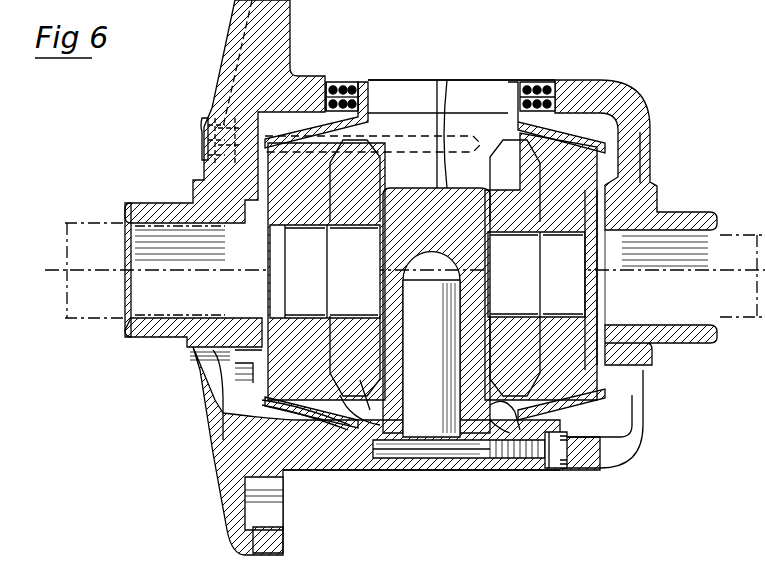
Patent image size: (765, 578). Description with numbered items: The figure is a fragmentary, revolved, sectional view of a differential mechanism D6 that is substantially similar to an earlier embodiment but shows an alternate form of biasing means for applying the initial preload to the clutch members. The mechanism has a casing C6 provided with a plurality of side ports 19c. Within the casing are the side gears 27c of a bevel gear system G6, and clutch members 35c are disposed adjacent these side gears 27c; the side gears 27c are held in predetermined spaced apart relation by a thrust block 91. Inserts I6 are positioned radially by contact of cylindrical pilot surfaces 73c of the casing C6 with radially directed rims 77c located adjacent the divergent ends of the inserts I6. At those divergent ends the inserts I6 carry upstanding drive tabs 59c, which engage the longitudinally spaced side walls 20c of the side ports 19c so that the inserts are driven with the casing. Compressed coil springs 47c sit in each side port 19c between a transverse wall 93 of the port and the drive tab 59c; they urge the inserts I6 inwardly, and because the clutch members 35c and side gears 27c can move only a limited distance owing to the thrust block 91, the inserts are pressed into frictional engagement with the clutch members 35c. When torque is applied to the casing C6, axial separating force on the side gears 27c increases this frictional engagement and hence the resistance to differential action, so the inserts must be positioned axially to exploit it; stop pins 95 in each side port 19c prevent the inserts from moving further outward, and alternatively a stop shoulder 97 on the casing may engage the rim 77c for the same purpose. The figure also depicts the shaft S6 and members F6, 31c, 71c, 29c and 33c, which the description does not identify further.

The differential mechanism D6 is at (646, 75).
The axle shaft S6 is at (105, 218).
The casing C6 is at (212, 470).
The friction flange F6 is at (262, 408).
The inserts I6 is at (270, 395).
The bevel gear system G6 is at (383, 405).
The stop shoulder 97 is at (326, 470).
The rims 77c is at (358, 422).
The clutch members 35c is at (598, 160).
The side gears 27c is at (639, 205).
The pinion shaft 31c is at (430, 430).
The thrust block 91 is at (448, 80).
The drive tabs 59c is at (370, 96).
The compressed coil springs 47c is at (346, 88).
The transverse wall 93 is at (330, 82).
The stop pins 95 is at (354, 88).
The side ports 19c is at (548, 84).
The side walls 20c is at (488, 80).
The locating pin 71c is at (204, 152).
The bolt 29c is at (470, 456).
The bolt head 33c is at (558, 468).
The cylindrical pilot surfaces 73c is at (500, 432).